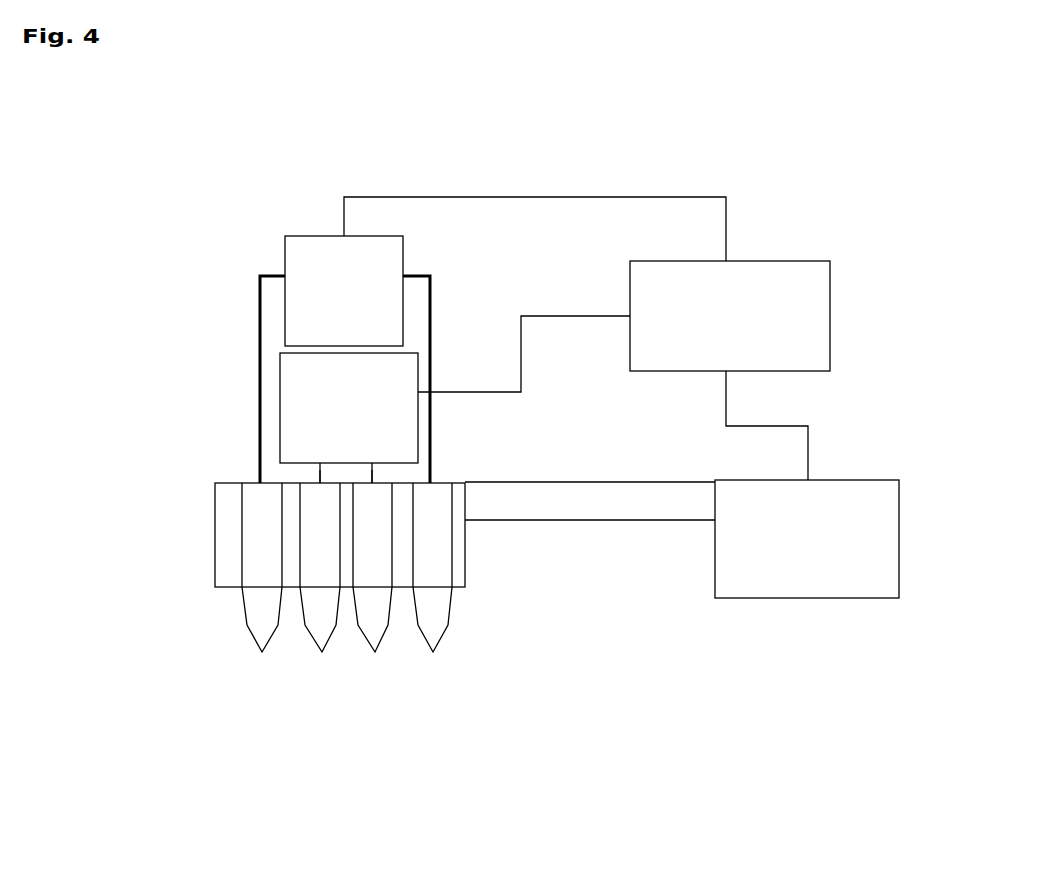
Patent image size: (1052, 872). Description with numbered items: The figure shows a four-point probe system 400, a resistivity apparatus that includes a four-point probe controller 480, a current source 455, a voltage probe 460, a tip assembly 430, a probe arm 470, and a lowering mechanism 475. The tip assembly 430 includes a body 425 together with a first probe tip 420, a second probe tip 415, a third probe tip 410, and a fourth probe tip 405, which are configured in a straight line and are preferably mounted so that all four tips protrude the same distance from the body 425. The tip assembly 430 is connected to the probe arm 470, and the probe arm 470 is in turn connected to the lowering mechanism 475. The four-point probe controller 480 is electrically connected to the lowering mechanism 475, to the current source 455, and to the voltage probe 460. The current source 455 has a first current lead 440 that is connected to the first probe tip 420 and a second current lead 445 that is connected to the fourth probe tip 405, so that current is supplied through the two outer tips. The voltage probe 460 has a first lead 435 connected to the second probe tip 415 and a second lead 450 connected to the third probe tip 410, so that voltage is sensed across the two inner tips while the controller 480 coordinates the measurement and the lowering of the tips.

The four-point probe system 400 is at (500, 497).
The fourth probe tip 405 is at (482, 606).
The third probe tip 410 is at (375, 652).
The second probe tip 415 is at (322, 652).
The first probe tip 420 is at (262, 652).
The body 425 is at (215, 548).
The tip assembly 430 is at (319, 596).
The first lead 435 is at (319, 470).
The first current lead 440 is at (253, 272).
The second current lead 445 is at (426, 275).
The second lead 450 is at (373, 474).
The current source 455 is at (344, 291).
The voltage probe 460 is at (349, 418).
The probe arm 470 is at (590, 501).
The lowering mechanism 475 is at (807, 539).
The four-point probe controller 480 is at (730, 316).